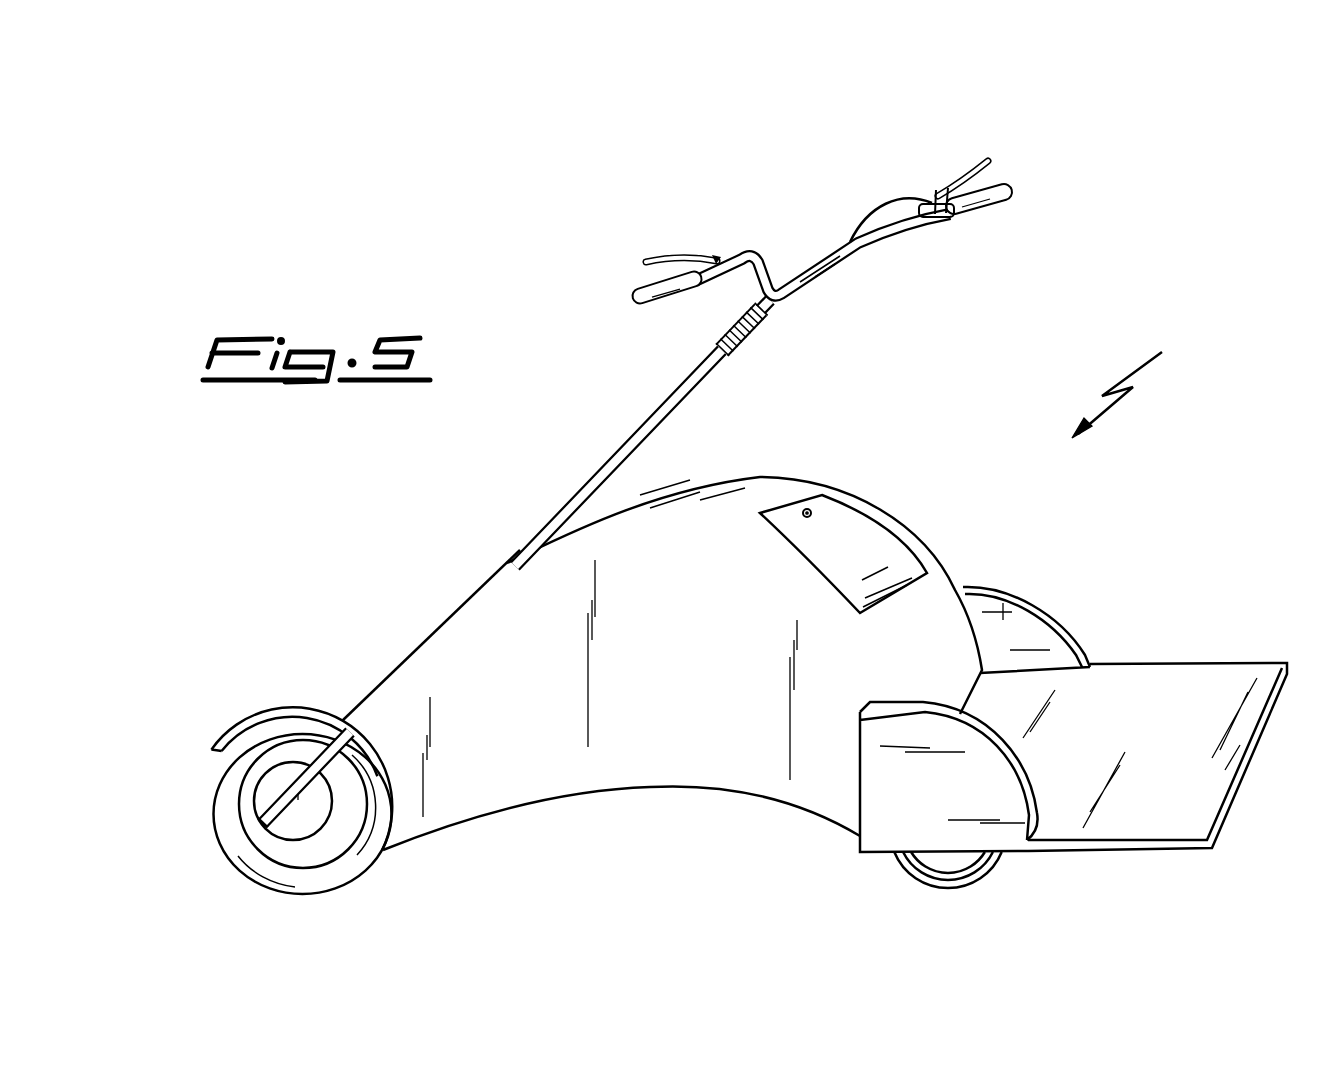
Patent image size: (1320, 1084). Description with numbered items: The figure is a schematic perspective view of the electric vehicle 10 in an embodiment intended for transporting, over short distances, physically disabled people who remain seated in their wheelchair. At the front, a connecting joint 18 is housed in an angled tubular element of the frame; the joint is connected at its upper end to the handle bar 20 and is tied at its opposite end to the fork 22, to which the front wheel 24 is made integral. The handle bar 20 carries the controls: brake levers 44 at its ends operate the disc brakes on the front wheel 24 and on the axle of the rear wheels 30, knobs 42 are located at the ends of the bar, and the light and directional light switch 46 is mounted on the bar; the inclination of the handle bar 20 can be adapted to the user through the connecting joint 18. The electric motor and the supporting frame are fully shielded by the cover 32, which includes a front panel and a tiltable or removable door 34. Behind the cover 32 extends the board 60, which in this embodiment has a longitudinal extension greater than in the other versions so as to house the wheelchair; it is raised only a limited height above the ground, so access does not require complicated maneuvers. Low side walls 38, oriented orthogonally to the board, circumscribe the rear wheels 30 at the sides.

The electric vehicle 10 is at (1145, 382).
The connecting joint 18 is at (757, 330).
The handle bar 20 is at (873, 250).
The fork 22 is at (322, 745).
The front wheel 24 is at (345, 862).
The rear wheels 30 is at (996, 864).
The cover 32 is at (690, 768).
The door 34 is at (866, 523).
The side walls 38 is at (1012, 612).
The knobs 42 is at (636, 292).
The brake levers 44 is at (672, 258).
The light and directional light switch 46 is at (932, 220).
The board 60 is at (1228, 668).